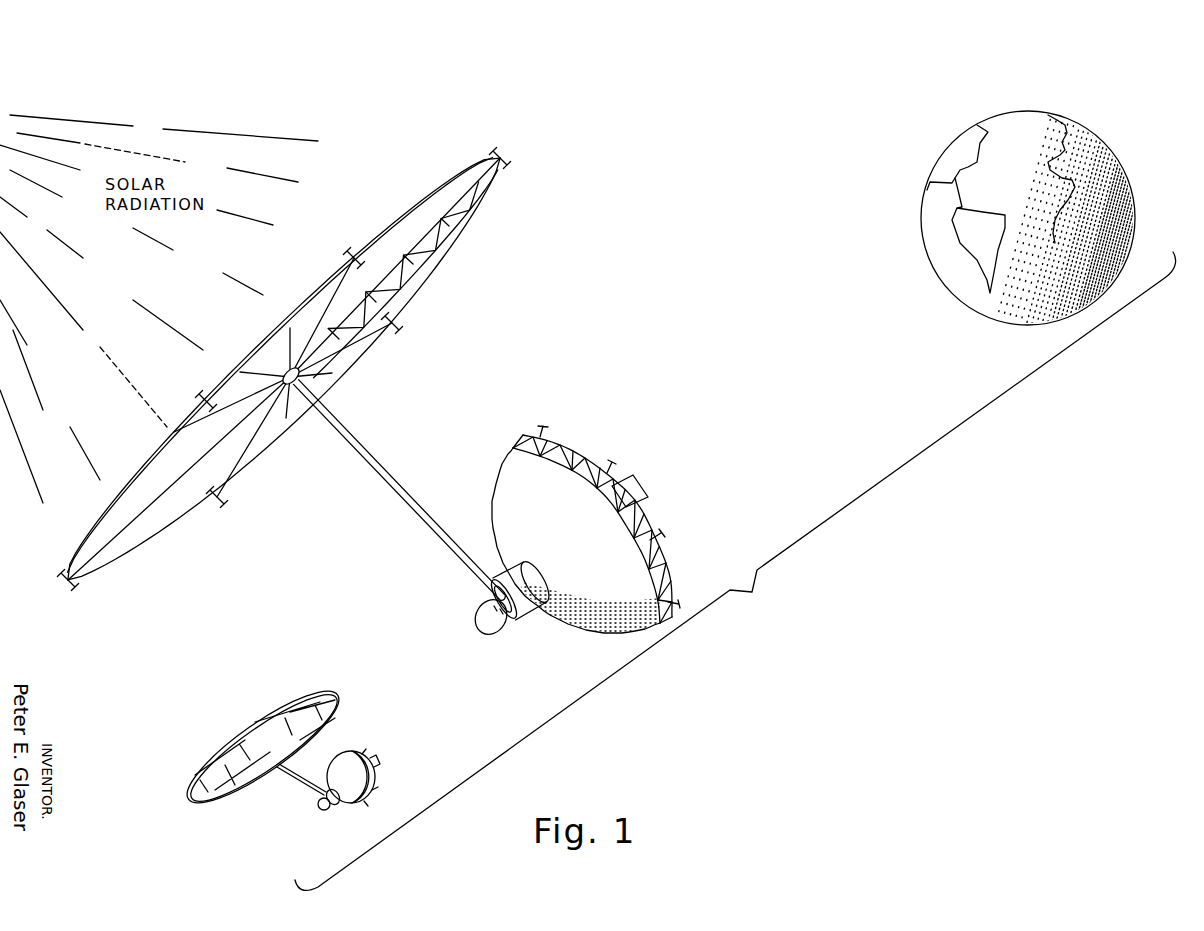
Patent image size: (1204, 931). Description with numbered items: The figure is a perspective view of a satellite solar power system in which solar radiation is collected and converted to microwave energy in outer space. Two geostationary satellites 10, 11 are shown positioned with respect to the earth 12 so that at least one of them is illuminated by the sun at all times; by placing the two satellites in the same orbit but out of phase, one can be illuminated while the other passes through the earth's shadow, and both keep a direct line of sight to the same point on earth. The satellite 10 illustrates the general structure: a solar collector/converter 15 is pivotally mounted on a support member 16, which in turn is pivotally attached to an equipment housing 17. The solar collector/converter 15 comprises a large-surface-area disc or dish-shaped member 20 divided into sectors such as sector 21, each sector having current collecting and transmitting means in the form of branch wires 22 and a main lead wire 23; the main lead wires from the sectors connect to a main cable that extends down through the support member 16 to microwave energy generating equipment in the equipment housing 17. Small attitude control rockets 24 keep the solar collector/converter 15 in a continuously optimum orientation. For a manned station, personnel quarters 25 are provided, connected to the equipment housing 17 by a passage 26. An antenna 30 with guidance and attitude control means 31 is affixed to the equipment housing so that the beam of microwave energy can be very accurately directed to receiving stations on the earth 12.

The geostationary satellite 10 is at (483, 386).
The geostationary satellite 11 is at (284, 808).
The earth 12 is at (946, 332).
The solar collector/converter 15 is at (298, 359).
The support member 16 is at (358, 443).
The equipment housing 17 is at (514, 582).
The disc or dish-shaped member 20 is at (401, 215).
The sector 21 is at (486, 197).
The branch wires 22 is at (458, 242).
The main lead wire 23 is at (420, 275).
The attitude control rockets 24 is at (502, 154).
The personnel quarters 25 is at (476, 626).
The passage 26 is at (492, 600).
The antenna 30 is at (512, 480).
The guidance and attitude control means 31 is at (655, 536).